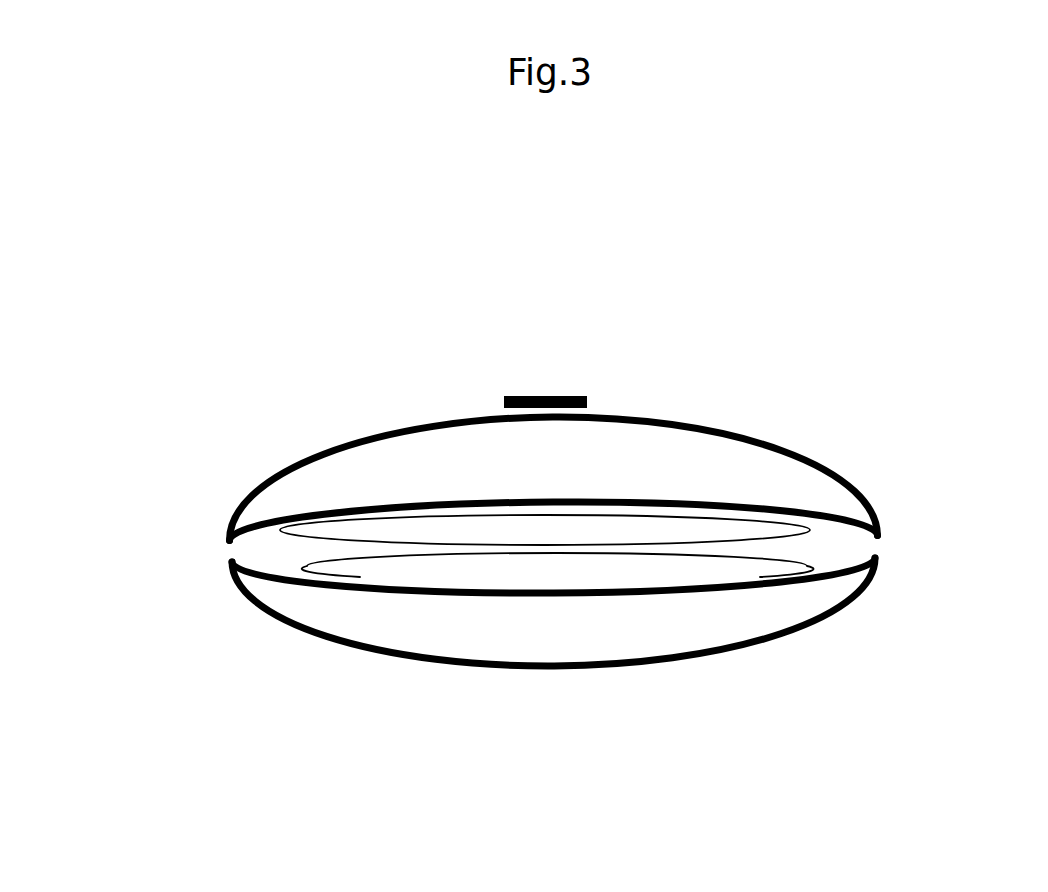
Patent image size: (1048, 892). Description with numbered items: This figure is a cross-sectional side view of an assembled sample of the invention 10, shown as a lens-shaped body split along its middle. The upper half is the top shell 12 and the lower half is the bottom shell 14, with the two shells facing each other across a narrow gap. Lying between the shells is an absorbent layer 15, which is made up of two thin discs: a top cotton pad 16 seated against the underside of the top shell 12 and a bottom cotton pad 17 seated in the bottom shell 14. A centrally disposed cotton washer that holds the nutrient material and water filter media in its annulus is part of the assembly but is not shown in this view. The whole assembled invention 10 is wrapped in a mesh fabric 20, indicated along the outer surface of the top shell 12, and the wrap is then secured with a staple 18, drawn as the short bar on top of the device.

The invention 10 is at (290, 697).
The top shell 12 is at (708, 470).
The bottom shell 14 is at (750, 627).
The absorbent layer 15 is at (793, 547).
The top cotton pad 16 is at (557, 523).
The bottom cotton pad 17 is at (562, 567).
The staple 18 is at (519, 388).
The mesh fabric 20 is at (303, 460).